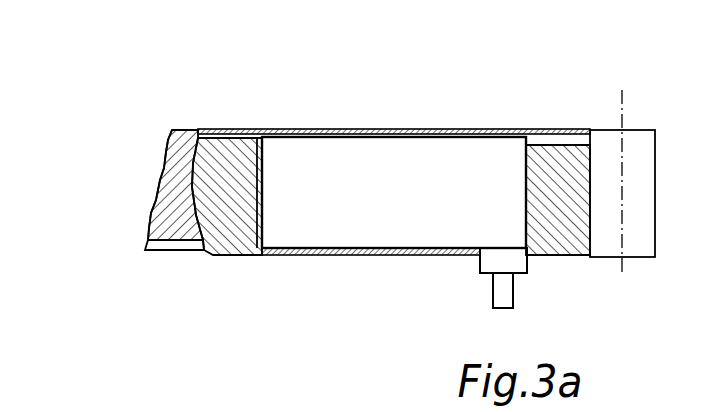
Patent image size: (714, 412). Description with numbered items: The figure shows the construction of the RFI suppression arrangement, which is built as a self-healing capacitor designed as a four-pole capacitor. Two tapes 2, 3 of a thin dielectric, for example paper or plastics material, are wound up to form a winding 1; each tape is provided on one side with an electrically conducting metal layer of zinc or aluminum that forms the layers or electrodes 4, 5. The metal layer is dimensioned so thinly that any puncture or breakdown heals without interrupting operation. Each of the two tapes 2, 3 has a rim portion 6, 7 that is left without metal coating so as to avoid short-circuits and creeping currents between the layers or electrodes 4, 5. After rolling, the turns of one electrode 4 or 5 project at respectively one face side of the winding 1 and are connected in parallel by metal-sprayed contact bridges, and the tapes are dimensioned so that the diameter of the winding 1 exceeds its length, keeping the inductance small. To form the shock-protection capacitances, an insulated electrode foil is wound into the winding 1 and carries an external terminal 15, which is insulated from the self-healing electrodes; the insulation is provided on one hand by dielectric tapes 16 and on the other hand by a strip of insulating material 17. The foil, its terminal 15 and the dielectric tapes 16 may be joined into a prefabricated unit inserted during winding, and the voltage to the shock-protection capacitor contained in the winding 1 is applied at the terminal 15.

The winding 1 is at (605, 155).
The tape 2 is at (154, 133).
The tape 3 is at (219, 266).
The layer or electrode 4 is at (180, 205).
The layer or electrode 5 is at (252, 177).
The rim portion 6 is at (173, 245).
The rim portion 7 is at (215, 138).
The external terminal 15 is at (505, 292).
The dielectric tapes 16 is at (323, 193).
The strip of insulating material 17 is at (492, 262).